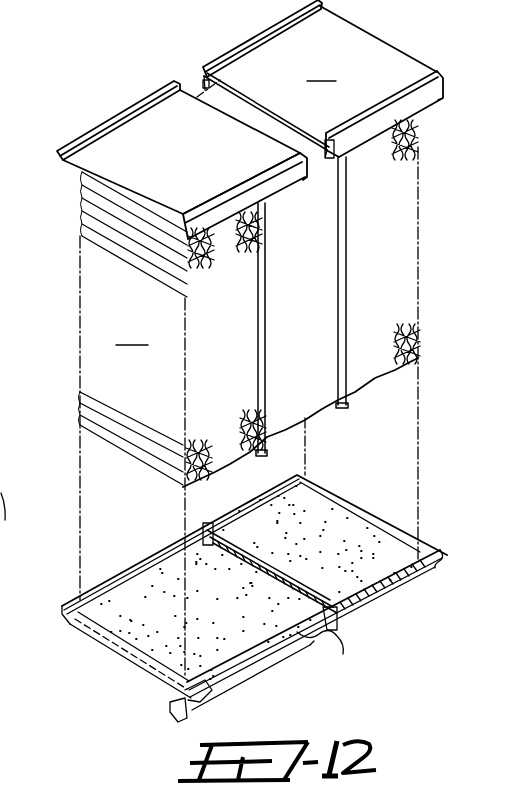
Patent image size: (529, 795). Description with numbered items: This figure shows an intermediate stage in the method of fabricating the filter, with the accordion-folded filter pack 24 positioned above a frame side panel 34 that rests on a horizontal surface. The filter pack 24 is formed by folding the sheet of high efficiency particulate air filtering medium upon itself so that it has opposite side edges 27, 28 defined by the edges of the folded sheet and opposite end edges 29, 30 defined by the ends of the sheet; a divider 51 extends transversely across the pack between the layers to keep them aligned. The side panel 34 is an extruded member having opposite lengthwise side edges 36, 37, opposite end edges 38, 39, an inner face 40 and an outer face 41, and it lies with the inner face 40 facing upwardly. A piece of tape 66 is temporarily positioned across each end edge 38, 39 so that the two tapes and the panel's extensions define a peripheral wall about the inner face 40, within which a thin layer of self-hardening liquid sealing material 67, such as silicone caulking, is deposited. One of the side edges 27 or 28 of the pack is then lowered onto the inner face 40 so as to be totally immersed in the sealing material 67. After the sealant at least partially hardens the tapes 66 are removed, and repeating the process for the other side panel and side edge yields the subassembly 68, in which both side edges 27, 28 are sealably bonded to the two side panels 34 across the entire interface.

The filter pack 24 is at (375, 378).
The side edge of the filter pack 27 is at (233, 132).
The side edge of the filter pack 28 is at (297, 424).
The end edge of the filter pack 29 is at (146, 456).
The end edge of the filter pack 30 is at (420, 203).
The side panel 34 is at (137, 158).
The side edge of the side panel 36 is at (204, 78).
The side edge of the side panel 37 is at (418, 104).
The end edge of the side panel 38 is at (100, 190).
The end edge of the side panel 39 is at (352, 30).
The inner face of the side panel 40 is at (258, 130).
The outer face of the side panel 41 is at (372, 45).
The divider 51 is at (338, 287).
The tape 66 is at (445, 556).
The sealing material 67 is at (195, 585).
The subassembly 68 is at (63, 391).